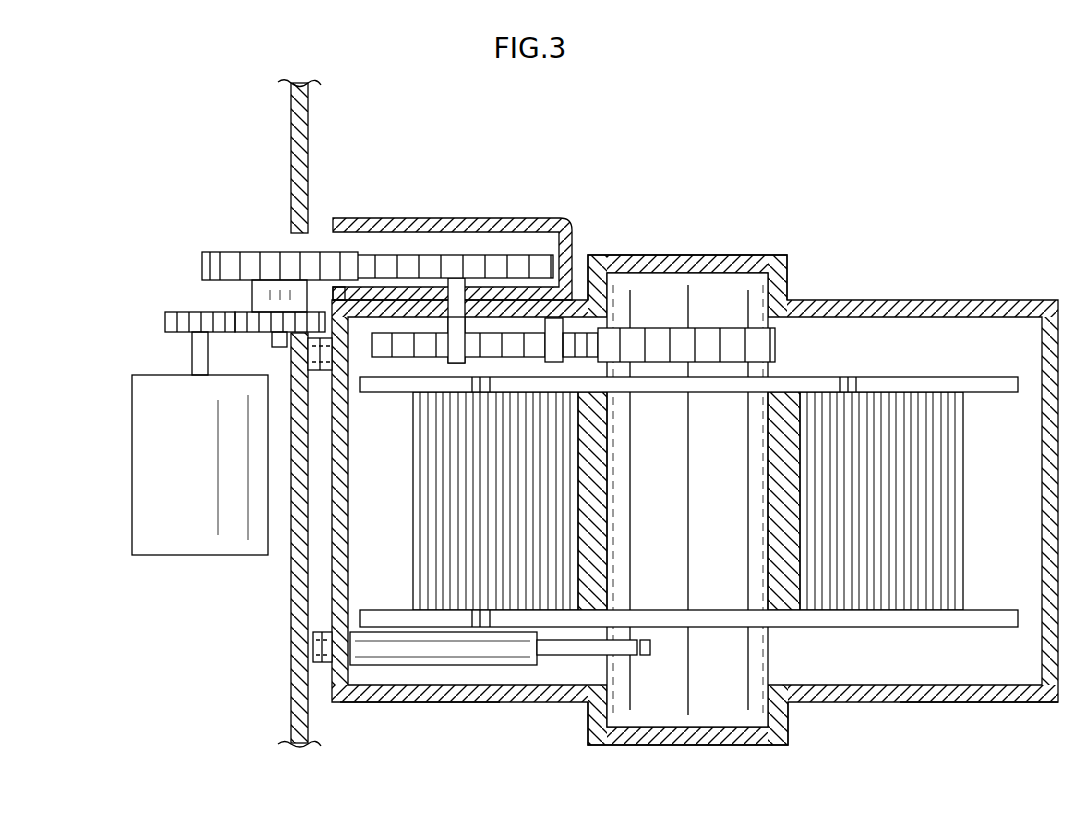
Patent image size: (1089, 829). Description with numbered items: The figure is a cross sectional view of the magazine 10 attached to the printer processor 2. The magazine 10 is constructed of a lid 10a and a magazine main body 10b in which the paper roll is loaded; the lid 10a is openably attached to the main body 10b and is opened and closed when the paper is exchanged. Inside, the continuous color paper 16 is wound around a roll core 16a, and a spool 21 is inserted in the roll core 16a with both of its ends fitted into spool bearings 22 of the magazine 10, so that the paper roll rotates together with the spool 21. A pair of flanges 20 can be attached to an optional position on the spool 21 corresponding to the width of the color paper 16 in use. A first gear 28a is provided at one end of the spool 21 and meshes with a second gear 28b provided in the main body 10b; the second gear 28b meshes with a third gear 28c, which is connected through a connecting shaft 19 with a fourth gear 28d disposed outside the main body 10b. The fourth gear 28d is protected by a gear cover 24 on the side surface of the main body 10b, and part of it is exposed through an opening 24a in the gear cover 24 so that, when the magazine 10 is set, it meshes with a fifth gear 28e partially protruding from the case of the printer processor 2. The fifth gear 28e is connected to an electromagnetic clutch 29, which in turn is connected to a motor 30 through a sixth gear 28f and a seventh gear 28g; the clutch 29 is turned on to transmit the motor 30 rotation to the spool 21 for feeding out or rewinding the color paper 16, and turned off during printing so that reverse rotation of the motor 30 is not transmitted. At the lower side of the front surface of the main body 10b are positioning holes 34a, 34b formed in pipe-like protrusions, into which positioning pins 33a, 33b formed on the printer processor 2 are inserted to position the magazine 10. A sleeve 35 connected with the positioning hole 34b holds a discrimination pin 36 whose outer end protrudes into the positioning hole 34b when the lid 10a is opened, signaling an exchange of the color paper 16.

The printer processor 2 is at (324, 88).
The magazine 10 is at (900, 290).
The lid 10a is at (985, 704).
The magazine main body 10b is at (386, 704).
The color paper 16 is at (963, 495).
The roll core 16a is at (800, 432).
The connecting shaft 19 is at (456, 288).
The flanges 20 is at (920, 378).
The spool 21 is at (746, 655).
The spool bearings 22 is at (786, 262).
The gear cover 24 is at (566, 222).
The opening 24a is at (366, 248).
The first gear 28a is at (778, 340).
The second gear 28b is at (578, 328).
The third gear 28c is at (380, 345).
The fourth gear 28d is at (499, 265).
The fifth gear 28e is at (214, 266).
The sixth gear 28f is at (252, 334).
The seventh gear 28g is at (165, 324).
The electromagnetic clutch 29 is at (270, 298).
The motor 30 is at (200, 543).
The positioning pin 33a is at (308, 353).
The positioning pin 33b is at (313, 648).
The positioning hole 34a is at (330, 362).
The positioning hole 34b is at (332, 660).
The sleeve 35 is at (443, 651).
The discrimination pin 36 is at (585, 650).